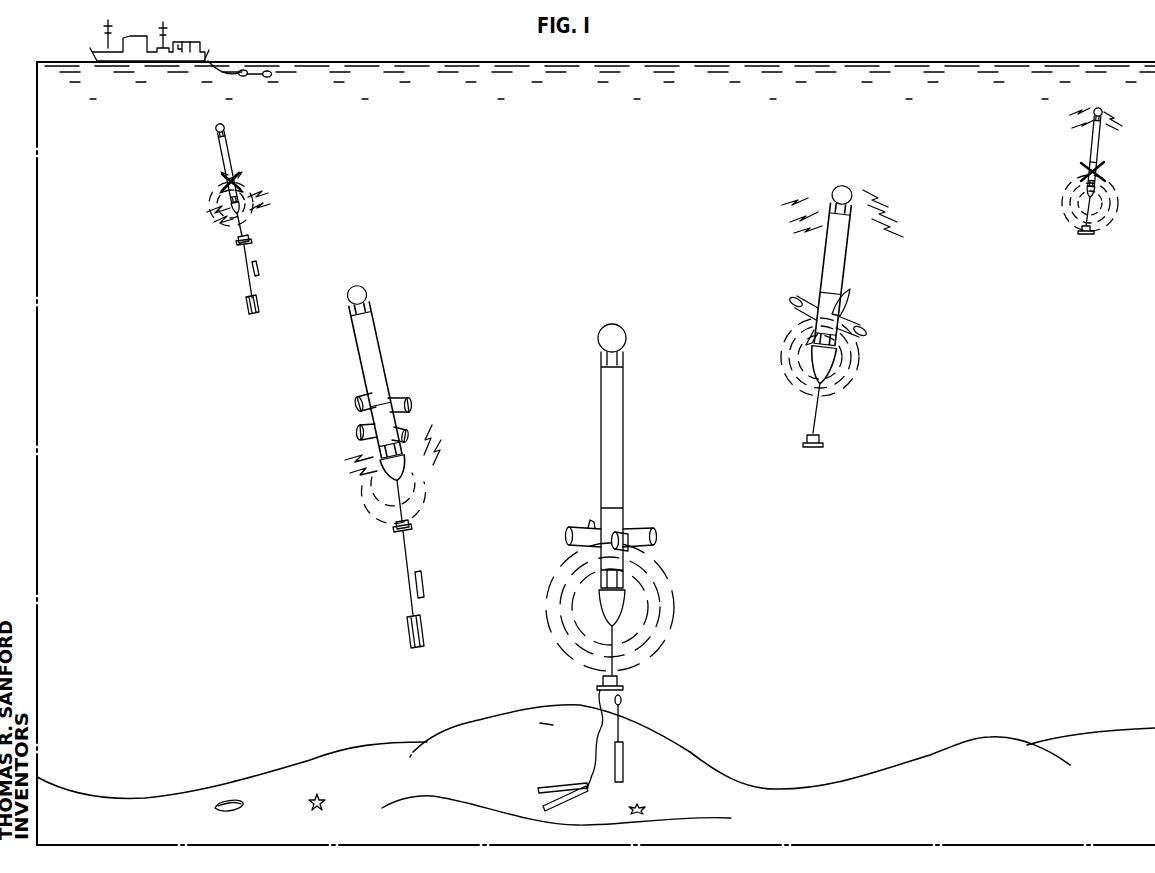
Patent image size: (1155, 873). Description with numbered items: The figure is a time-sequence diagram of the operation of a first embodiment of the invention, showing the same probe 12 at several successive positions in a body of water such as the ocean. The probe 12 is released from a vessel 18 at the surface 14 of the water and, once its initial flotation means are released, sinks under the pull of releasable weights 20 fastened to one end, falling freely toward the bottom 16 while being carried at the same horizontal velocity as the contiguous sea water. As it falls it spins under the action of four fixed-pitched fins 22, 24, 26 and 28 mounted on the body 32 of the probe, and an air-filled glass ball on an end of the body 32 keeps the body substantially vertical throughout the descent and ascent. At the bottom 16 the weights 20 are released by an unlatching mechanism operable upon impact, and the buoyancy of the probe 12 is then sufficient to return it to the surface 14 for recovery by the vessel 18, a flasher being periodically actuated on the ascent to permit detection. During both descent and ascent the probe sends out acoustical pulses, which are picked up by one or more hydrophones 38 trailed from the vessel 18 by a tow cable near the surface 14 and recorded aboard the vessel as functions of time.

The probe 12 is at (263, 158).
The surface 14 is at (368, 62).
The bottom 16 is at (703, 762).
The vessel 18 is at (174, 43).
The releasable weights 20 is at (279, 263).
The fixed-pitched fin 22 is at (408, 399).
The fixed-pitched fin 24 is at (357, 398).
The fixed-pitched fin 26 is at (358, 430).
The fixed-pitched fin 28 is at (408, 432).
The body 32 is at (373, 332).
The hydrophones 38 is at (268, 71).